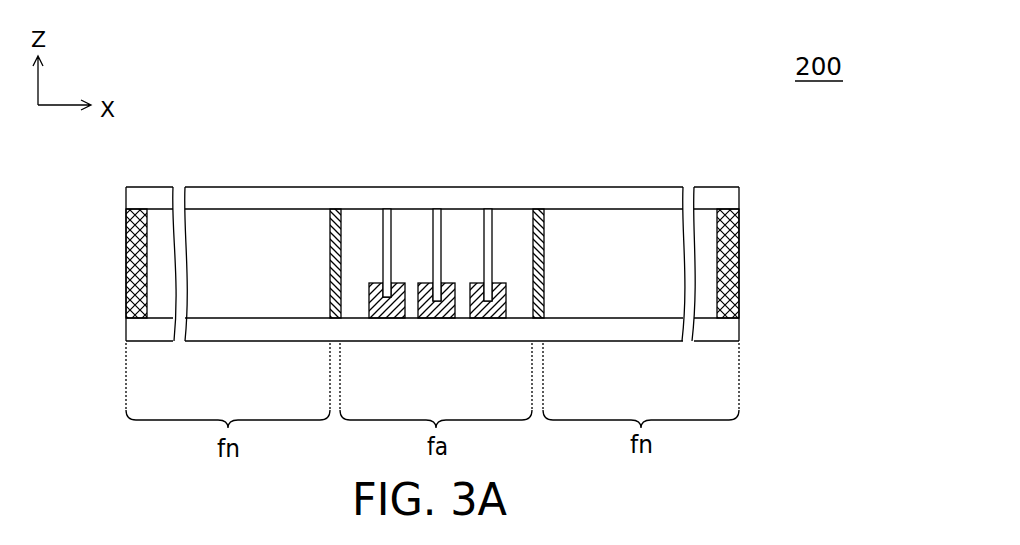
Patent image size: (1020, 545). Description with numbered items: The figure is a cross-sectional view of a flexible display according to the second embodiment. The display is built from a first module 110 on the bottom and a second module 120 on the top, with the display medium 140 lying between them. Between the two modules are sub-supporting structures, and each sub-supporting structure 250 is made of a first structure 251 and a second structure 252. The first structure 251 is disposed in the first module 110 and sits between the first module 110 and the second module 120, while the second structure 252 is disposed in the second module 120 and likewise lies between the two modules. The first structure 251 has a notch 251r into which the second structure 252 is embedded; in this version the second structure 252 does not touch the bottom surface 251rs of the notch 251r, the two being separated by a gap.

The first module 110 is at (723, 329).
The second module 120 is at (713, 197).
The display medium 140 is at (157, 220).
The sub-supporting structure 250 is at (443, 142).
The first structure 251 is at (402, 281).
The notch 251r is at (397, 301).
The bottom surface of the notch 251rs is at (378, 283).
The second structure 252 is at (385, 217).